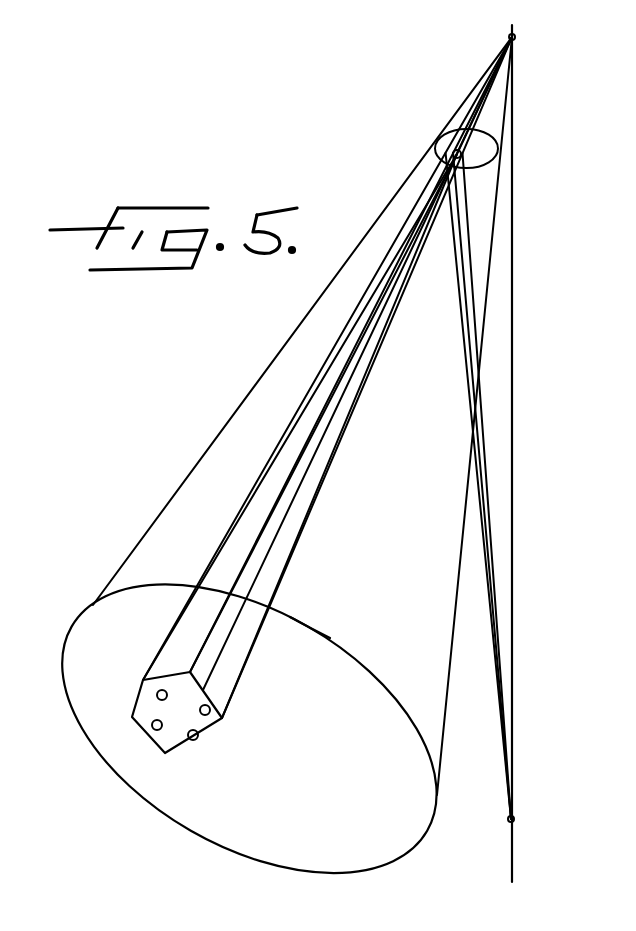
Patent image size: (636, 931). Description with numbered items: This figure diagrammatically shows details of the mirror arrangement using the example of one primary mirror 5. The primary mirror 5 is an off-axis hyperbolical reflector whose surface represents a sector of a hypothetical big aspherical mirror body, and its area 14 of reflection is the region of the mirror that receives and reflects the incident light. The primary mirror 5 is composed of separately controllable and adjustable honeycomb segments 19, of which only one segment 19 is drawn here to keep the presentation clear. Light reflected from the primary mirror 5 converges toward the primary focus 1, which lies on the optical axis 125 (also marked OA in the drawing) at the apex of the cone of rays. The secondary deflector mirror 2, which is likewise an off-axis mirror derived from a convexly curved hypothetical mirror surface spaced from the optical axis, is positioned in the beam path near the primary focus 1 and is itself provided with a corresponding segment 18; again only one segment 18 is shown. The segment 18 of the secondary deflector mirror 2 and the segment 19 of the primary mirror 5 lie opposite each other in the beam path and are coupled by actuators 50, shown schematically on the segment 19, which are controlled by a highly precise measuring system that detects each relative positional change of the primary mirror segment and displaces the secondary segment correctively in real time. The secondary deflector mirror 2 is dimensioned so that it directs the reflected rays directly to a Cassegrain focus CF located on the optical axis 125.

The primary focus 1 is at (515, 35).
The secondary deflector mirror 2 is at (440, 157).
The primary mirror 5 is at (172, 816).
The area of reflection 14 is at (313, 625).
The segment 18 is at (460, 152).
The honeycomb segment 19 is at (147, 737).
The actuators 50 is at (209, 713).
The optical axis OA is at (513, 352).
The optical axis 125 is at (513, 540).
The Cassegrain focus CF is at (515, 819).